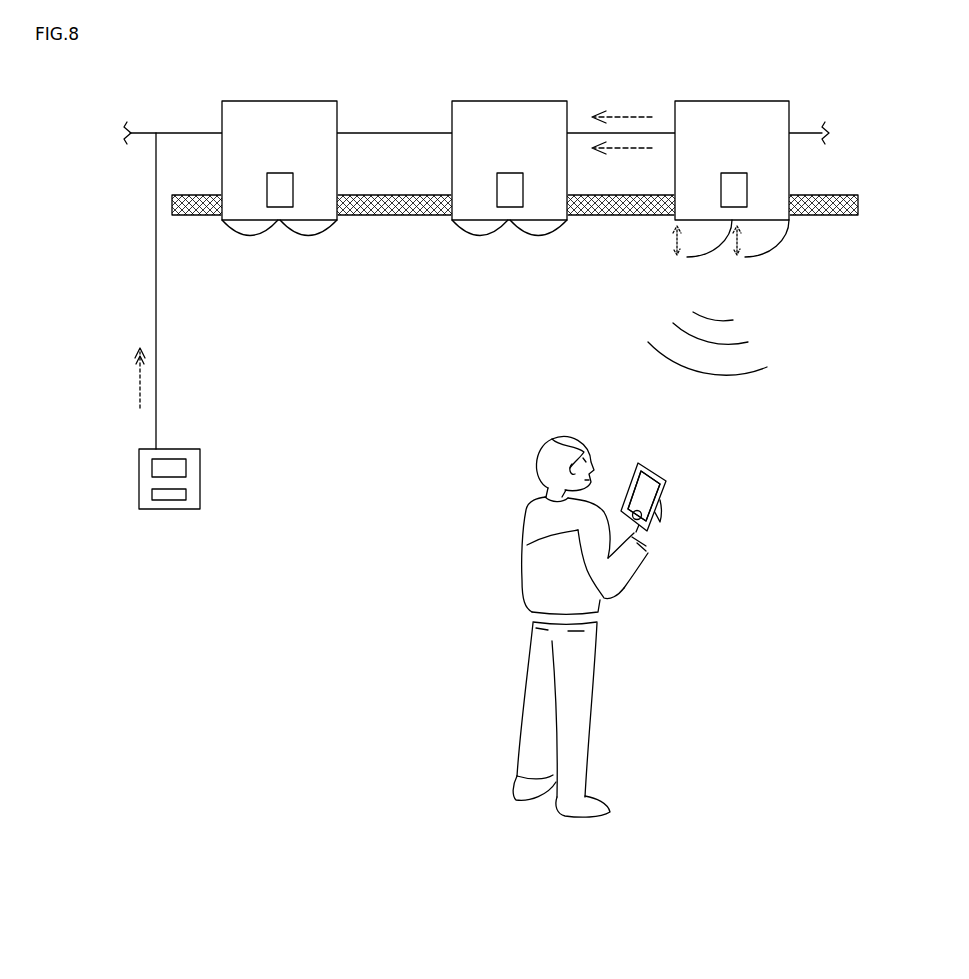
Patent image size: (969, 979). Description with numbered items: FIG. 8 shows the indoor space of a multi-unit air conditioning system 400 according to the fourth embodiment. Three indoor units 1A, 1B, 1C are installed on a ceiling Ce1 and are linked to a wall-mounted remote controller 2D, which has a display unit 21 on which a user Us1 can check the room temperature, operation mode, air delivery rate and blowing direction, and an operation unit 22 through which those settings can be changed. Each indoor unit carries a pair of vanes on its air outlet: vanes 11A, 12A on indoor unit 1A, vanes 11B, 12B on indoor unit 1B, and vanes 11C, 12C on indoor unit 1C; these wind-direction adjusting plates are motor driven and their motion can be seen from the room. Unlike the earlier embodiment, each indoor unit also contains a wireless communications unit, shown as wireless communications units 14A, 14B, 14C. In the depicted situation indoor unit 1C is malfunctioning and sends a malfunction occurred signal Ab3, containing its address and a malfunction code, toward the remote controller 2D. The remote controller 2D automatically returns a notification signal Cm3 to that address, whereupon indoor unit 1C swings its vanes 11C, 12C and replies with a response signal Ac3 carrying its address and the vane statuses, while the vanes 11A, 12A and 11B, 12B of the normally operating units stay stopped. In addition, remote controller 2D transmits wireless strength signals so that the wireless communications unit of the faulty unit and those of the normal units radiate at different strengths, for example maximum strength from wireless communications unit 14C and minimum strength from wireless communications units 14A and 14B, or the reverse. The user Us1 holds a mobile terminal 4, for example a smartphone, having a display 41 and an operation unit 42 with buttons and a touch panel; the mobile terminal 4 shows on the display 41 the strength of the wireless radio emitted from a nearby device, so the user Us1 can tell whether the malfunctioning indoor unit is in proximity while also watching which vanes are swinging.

The multi-unit air conditioning system 400 is at (101, 79).
The indoor unit 1A is at (294, 101).
The indoor unit 1B is at (526, 101).
The indoor unit 1C is at (748, 101).
The wireless communications unit 14A is at (279, 173).
The wireless communications unit 14B is at (509, 173).
The wireless communications unit 14C is at (734, 173).
The vane 11A is at (252, 236).
The vane 12A is at (304, 236).
The vane 11B is at (482, 236).
The vane 12B is at (534, 236).
The vane 11C is at (707, 259).
The vane 12C is at (766, 259).
The ceiling Ce1 is at (826, 217).
The malfunction occurred signal Ab3 is at (627, 114).
The response signal Ac3 is at (629, 151).
The notification signal Cm3 is at (138, 388).
The remote controller 2D is at (179, 510).
The display unit 21 is at (187, 468).
The operation unit 22 is at (187, 494).
The mobile terminal 4 is at (667, 481).
The display 41 is at (652, 496).
The operation unit 42 is at (632, 512).
The user Us1 is at (603, 598).